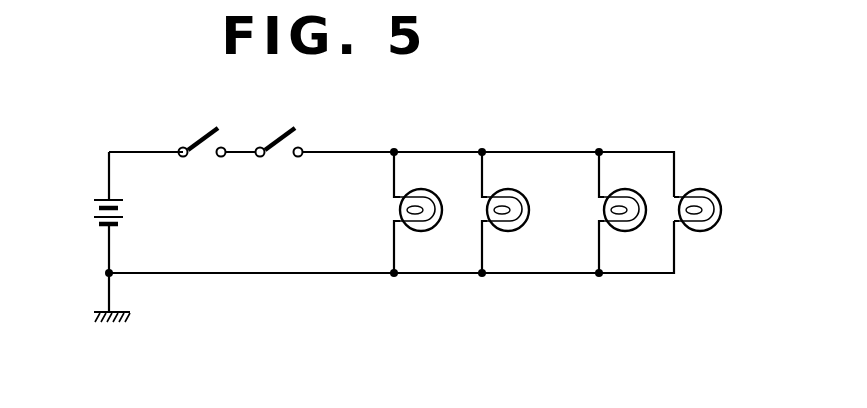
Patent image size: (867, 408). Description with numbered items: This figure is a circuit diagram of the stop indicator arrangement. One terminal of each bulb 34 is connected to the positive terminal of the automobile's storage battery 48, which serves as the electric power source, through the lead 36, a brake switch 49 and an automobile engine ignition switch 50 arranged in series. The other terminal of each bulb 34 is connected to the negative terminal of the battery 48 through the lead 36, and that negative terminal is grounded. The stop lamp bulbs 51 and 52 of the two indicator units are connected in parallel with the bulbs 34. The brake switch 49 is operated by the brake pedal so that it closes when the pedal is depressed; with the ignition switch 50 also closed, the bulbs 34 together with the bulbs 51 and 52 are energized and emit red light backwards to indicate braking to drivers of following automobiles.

The bulb 34 is at (638, 191).
The lead 36 is at (600, 168).
The storage battery 48 is at (97, 211).
The brake switch 49 is at (281, 135).
The ignition switch 50 is at (203, 135).
The stop lamp bulb 51 is at (425, 232).
The stop lamp bulb 52 is at (515, 230).